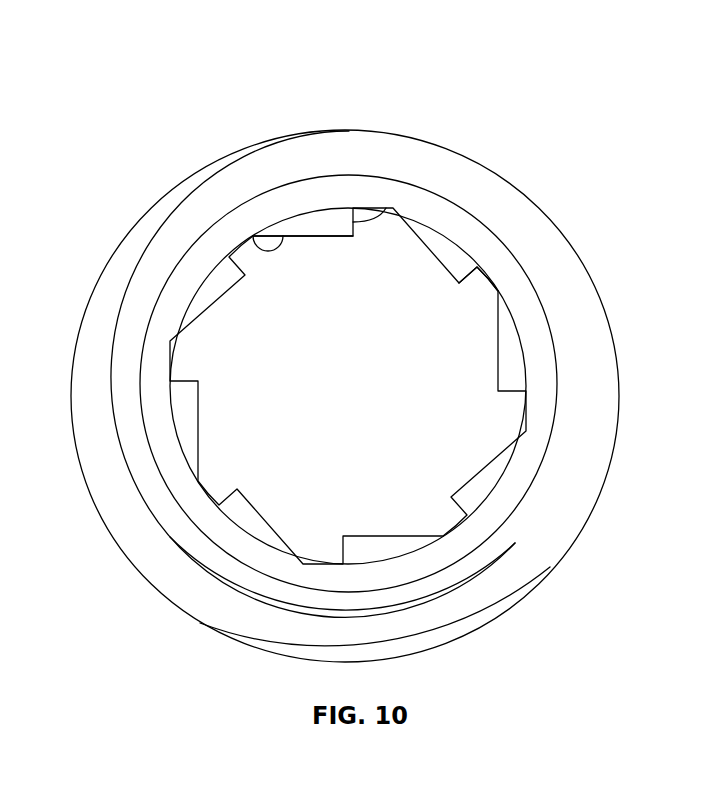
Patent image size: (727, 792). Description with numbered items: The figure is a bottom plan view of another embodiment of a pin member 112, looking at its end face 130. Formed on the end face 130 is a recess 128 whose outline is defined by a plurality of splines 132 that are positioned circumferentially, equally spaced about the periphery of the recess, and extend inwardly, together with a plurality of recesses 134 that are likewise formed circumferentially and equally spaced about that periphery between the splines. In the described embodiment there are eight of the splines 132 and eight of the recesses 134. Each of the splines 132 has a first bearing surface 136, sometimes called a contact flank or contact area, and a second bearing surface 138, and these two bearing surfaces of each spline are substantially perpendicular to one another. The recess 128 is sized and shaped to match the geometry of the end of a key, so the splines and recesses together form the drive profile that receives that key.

The pin member 112 is at (109, 196).
The recess 128 is at (306, 398).
The end face 130 is at (157, 373).
The splines 132 is at (320, 221).
The recesses 134 is at (483, 285).
The first bearing surface 136 is at (387, 209).
The second bearing surface 138 is at (250, 234).